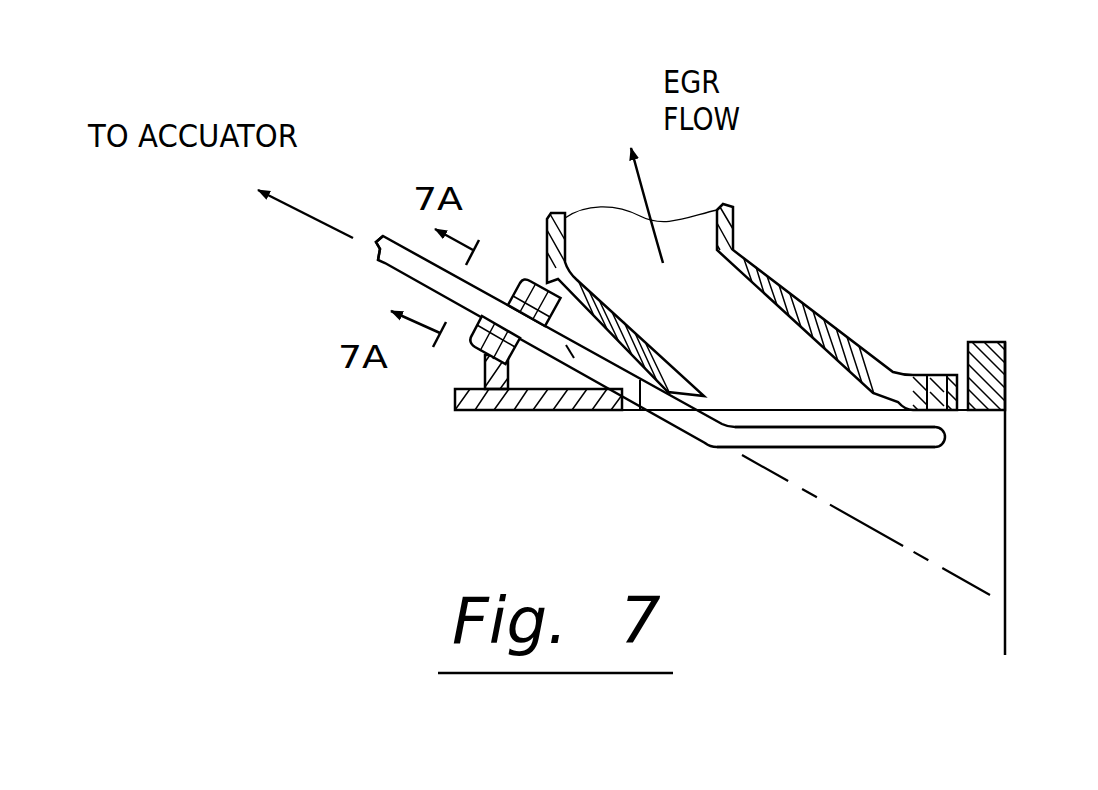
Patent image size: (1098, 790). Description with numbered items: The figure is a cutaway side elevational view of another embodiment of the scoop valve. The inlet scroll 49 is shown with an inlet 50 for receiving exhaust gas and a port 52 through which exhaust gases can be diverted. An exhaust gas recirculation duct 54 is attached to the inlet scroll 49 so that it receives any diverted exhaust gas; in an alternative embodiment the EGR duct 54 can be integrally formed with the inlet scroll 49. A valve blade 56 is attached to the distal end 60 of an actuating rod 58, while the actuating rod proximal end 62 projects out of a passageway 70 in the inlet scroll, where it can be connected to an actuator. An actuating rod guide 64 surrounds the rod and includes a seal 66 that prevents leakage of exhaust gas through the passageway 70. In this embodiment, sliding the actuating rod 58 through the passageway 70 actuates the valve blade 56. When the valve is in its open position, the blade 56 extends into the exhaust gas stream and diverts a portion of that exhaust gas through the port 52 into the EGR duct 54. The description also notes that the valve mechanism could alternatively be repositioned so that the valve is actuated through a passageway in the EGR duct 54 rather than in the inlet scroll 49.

The inlet scroll 49 is at (555, 410).
The inlet 50 is at (1005, 342).
The port 52 is at (812, 410).
The exhaust gas recirculation duct 54 is at (693, 204).
The valve blade 56 is at (875, 450).
The actuating rod 58 is at (390, 221).
The distal end 60 is at (640, 390).
The actuating rod proximal end 62 is at (403, 273).
The actuating rod guide 64 is at (528, 272).
The seal 66 is at (500, 297).
The passageway 70 is at (525, 347).